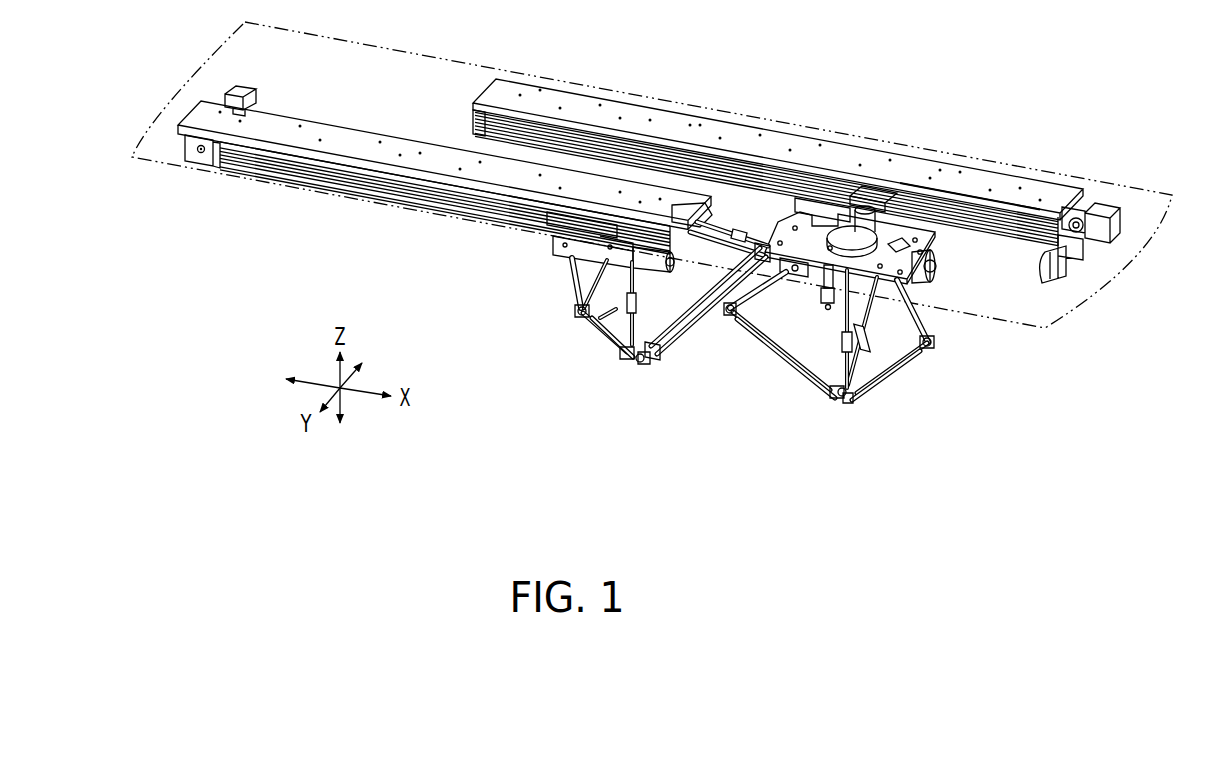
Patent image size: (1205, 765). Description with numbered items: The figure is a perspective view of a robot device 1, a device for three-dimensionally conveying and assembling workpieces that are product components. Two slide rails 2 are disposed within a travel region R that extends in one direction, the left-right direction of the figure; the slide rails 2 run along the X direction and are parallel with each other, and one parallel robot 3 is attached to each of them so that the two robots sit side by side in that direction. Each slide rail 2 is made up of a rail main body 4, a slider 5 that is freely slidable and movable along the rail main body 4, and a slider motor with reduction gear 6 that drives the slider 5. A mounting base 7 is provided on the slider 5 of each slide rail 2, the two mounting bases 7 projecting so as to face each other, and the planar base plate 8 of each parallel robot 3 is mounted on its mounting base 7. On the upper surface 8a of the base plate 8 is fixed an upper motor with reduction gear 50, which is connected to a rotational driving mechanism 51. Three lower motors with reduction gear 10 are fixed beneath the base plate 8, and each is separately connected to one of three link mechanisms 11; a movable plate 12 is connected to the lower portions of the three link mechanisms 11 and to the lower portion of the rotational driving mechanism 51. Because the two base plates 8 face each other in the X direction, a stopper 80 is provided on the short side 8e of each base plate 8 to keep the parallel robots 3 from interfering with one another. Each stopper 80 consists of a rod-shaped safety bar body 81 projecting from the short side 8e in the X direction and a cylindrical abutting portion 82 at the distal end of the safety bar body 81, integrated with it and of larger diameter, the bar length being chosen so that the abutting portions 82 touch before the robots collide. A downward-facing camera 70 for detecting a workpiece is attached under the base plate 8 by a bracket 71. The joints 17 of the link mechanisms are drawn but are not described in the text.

The robot device 1 is at (854, 107).
The slide rail 2 is at (630, 149).
The parallel robot 3 is at (754, 355).
The rail main body 4 is at (307, 118).
The slider 5 is at (933, 205).
The slider motor with reduction gear 6 is at (228, 91).
The mounting base 7 is at (809, 200).
The base plate 8 is at (851, 252).
The upper surface 8a is at (899, 243).
The short side 8e is at (704, 222).
The lower motor with reduction gear 10 is at (938, 263).
The link mechanism 11 is at (568, 277).
The movable plate 12 is at (845, 405).
The joint 17 is at (937, 343).
The upper motor with reduction gear 50 is at (882, 205).
The rotational driving mechanism 51 is at (840, 326).
The camera 70 is at (826, 301).
The bracket 71 is at (820, 279).
The stopper 80 is at (707, 343).
The safety bar body 81 is at (700, 292).
The abutting portion 82 is at (722, 277).
The travel region R is at (421, 53).